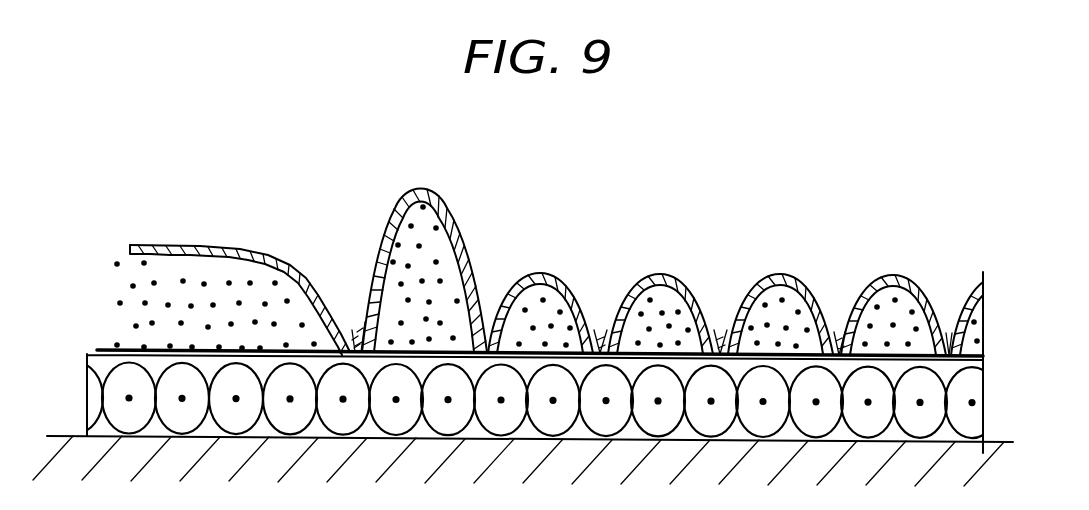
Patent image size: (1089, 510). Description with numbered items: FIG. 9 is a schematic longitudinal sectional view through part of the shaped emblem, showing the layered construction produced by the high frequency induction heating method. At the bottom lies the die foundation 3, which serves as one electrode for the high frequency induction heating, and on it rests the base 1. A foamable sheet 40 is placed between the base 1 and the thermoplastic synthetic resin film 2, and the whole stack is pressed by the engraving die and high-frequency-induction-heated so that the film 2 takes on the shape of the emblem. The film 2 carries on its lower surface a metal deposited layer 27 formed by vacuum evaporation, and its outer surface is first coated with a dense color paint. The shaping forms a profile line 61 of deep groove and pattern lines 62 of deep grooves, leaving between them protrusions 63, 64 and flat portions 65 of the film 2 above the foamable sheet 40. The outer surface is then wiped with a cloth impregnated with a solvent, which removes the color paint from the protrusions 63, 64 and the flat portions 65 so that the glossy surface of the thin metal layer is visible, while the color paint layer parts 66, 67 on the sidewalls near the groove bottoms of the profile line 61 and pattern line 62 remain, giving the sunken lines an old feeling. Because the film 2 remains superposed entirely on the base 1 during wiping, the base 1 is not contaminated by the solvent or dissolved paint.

The base 1 is at (88, 398).
The thermoplastic synthetic resin film 2 is at (564, 247).
The die foundation 3 is at (986, 442).
The metal deposited layer 27 is at (122, 350).
The foamable sheet 40 is at (205, 290).
The profile line 61 is at (346, 300).
The pattern line 62 is at (718, 340).
The protrusion 63 is at (448, 203).
The protrusion 64 is at (541, 288).
The flat portion 65 is at (236, 248).
The color paint layer part 66 is at (357, 297).
The color paint layer part 67 is at (603, 335).